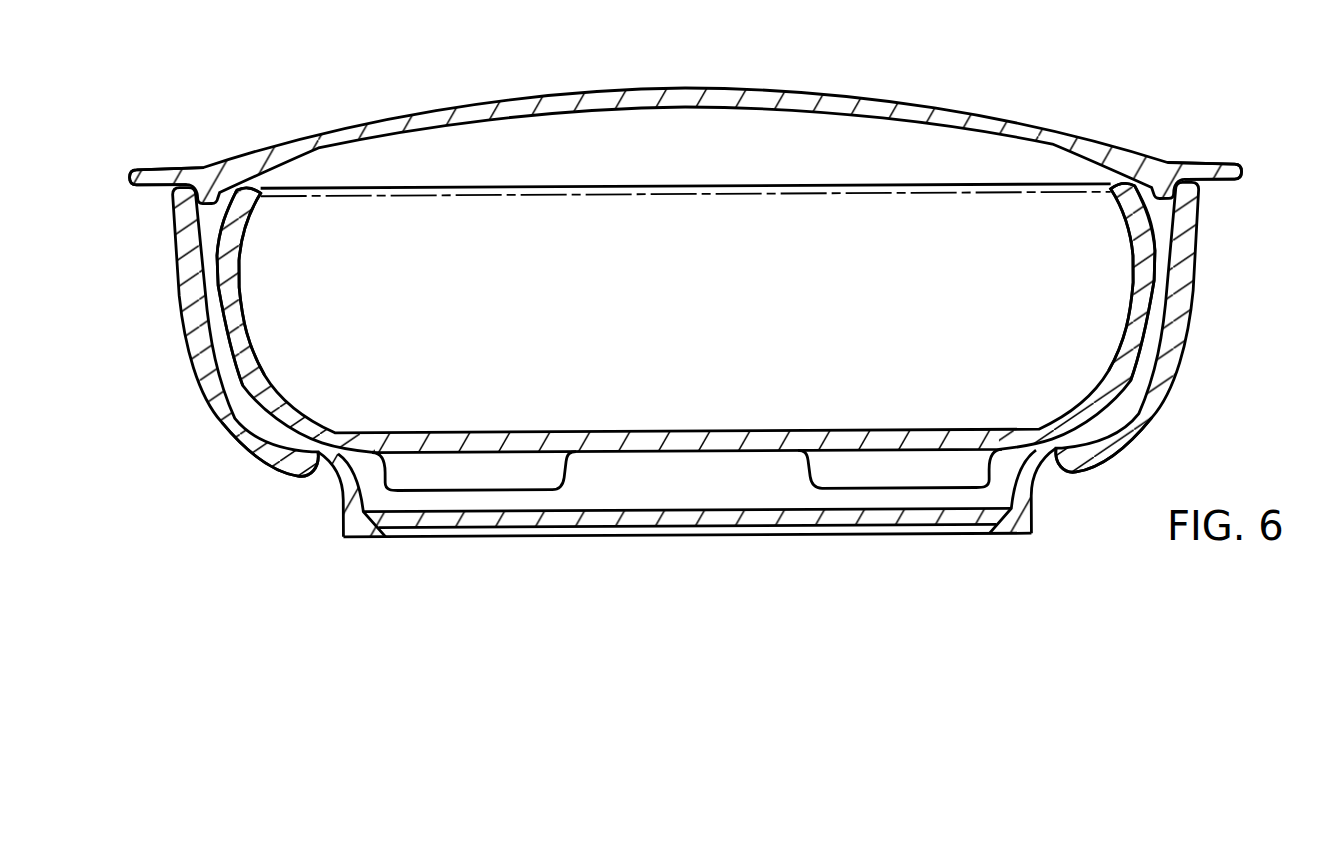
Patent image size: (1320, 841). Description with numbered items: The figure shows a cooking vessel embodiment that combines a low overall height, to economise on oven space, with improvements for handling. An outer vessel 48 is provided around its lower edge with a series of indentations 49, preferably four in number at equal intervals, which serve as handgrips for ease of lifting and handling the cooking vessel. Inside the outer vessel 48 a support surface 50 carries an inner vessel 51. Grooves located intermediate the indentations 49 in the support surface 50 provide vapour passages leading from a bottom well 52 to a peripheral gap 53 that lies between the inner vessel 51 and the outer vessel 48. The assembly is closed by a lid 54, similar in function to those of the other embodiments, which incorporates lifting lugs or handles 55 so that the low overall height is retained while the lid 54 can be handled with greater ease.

The outer vessel 48 is at (203, 372).
The indentations 49 is at (296, 476).
The support surface 50 is at (324, 458).
The inner vessel 51 is at (770, 428).
The bottom well 52 is at (560, 498).
The peripheral gap 53 is at (213, 289).
The lid 54 is at (933, 105).
The lifting lugs or handles 55 is at (152, 168).